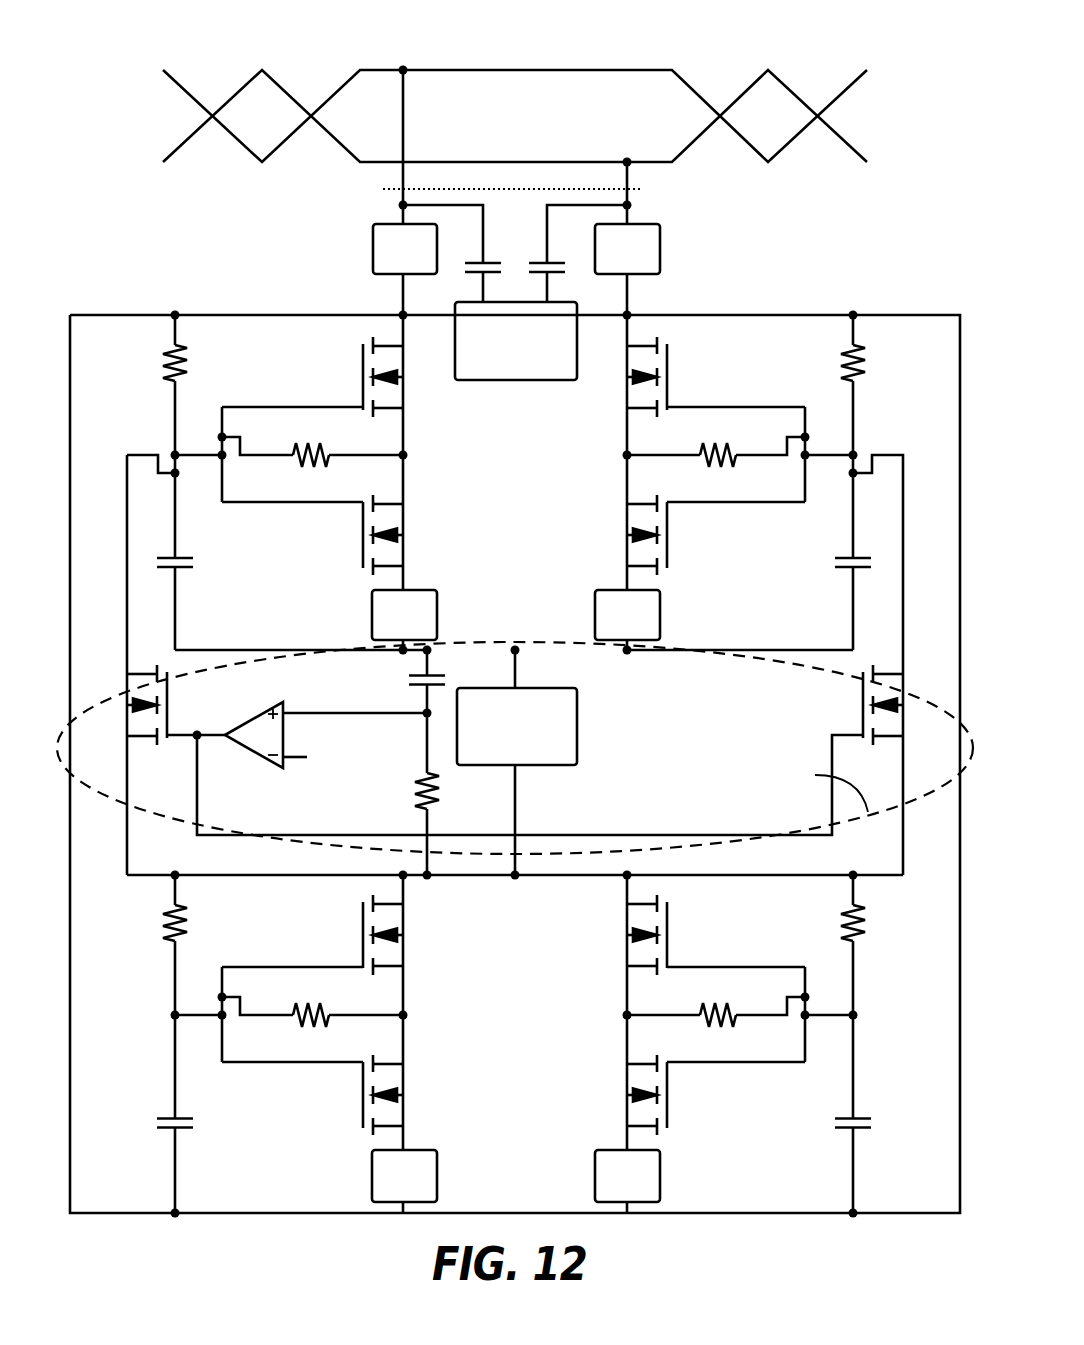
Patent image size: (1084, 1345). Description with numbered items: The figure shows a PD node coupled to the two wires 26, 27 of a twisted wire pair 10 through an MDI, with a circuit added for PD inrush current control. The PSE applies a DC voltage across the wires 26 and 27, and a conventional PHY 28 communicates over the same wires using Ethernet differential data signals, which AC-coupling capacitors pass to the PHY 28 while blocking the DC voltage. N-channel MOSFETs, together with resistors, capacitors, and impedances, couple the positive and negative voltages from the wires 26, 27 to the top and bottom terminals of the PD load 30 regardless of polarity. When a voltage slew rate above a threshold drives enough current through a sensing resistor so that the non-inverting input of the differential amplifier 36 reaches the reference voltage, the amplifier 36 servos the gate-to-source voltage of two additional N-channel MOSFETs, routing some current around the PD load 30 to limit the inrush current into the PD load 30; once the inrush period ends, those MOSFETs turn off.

The twisted wire pair 10 is at (515, 612).
The wire 26 is at (175, 153).
The wire 27 is at (173, 77).
The PHY 28 is at (495, 380).
The PD load 30 is at (577, 738).
The differential amplifier 36 is at (243, 718).